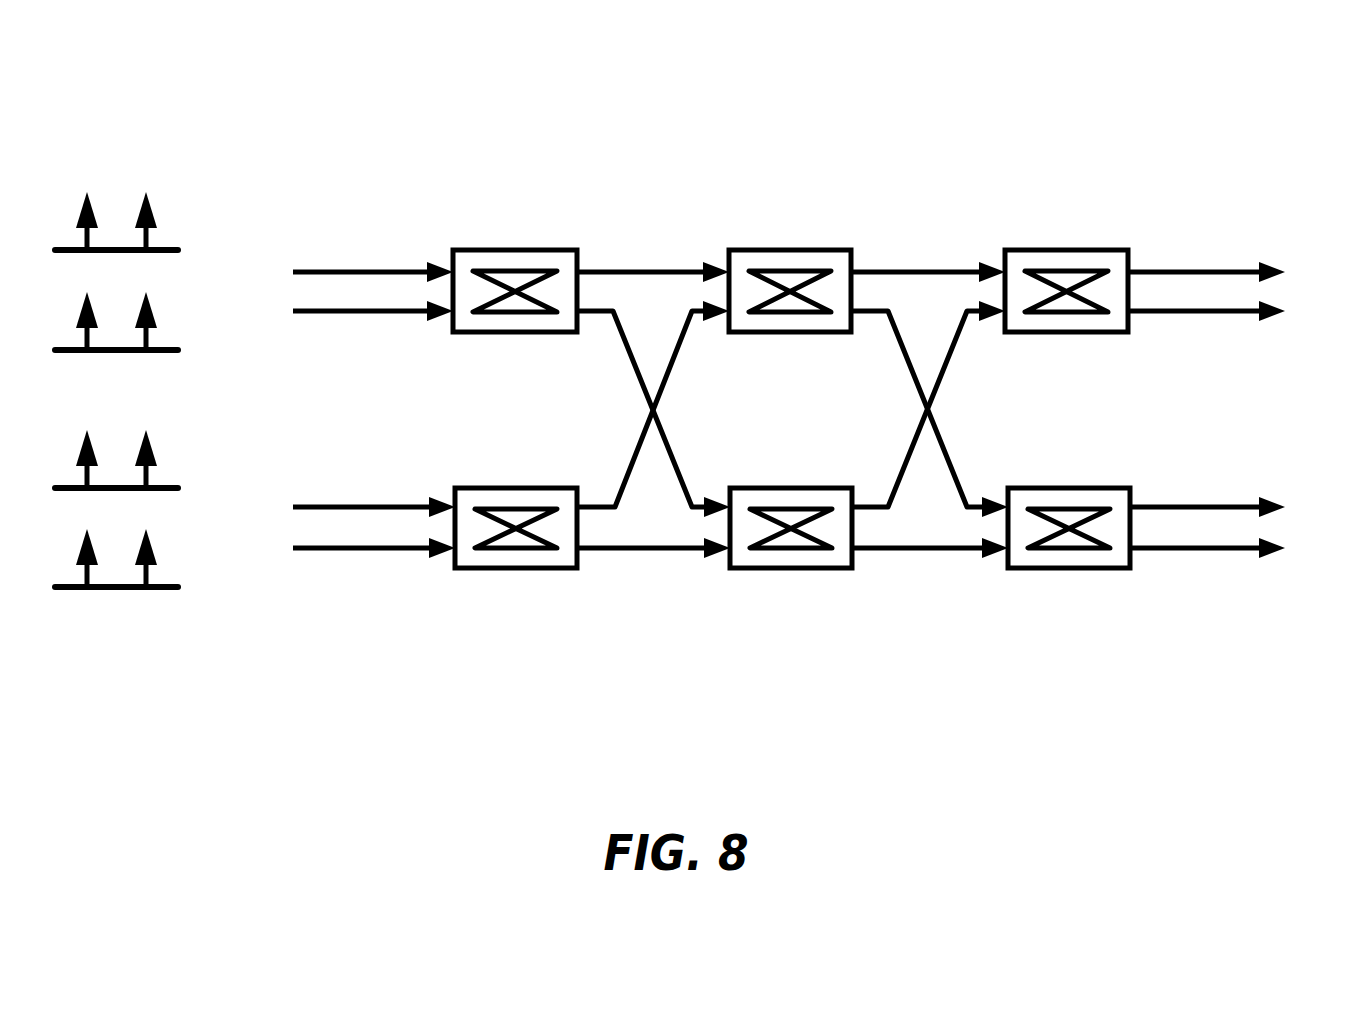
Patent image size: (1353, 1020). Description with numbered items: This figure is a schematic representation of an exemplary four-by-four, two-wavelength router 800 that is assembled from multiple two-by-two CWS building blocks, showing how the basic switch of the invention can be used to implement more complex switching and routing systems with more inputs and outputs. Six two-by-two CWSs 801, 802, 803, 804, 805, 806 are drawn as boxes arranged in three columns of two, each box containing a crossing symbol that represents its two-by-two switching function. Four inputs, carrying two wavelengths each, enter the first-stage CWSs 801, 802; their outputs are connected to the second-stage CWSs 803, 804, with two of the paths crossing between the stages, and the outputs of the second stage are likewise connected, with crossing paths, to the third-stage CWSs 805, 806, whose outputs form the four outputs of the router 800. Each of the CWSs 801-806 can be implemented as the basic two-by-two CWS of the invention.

The 4×4, two-wavelength router 800 is at (713, 39).
The 2×2 CWS 801 is at (518, 250).
The 2×2 CWS 802 is at (518, 568).
The 2×2 CWS 803 is at (793, 250).
The 2×2 CWS 804 is at (793, 568).
The 2×2 CWS 805 is at (1070, 250).
The 2×2 CWS 806 is at (1070, 568).